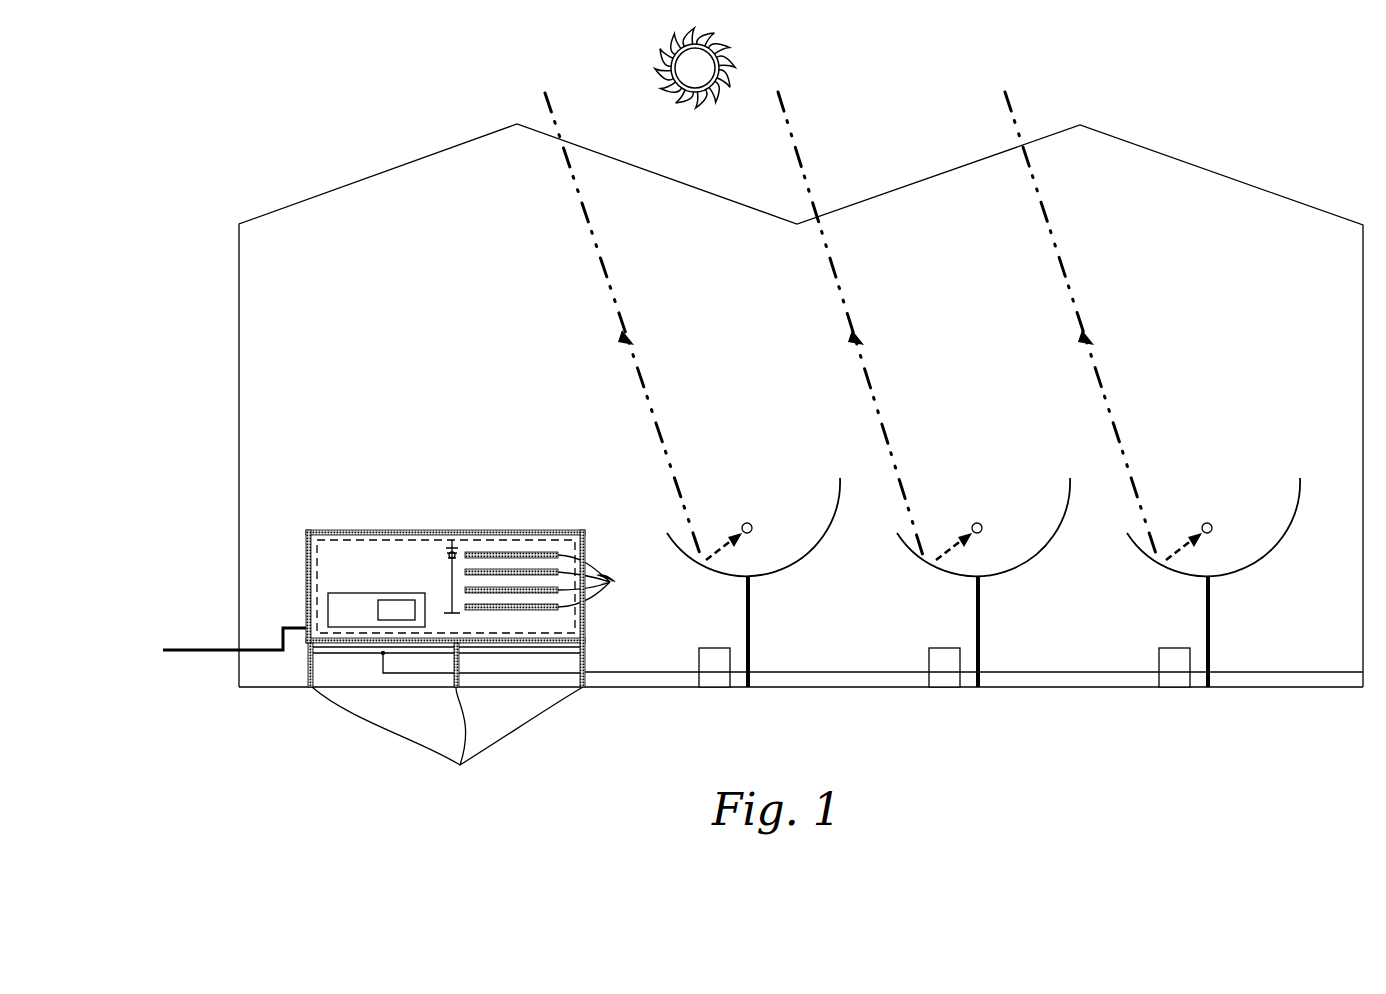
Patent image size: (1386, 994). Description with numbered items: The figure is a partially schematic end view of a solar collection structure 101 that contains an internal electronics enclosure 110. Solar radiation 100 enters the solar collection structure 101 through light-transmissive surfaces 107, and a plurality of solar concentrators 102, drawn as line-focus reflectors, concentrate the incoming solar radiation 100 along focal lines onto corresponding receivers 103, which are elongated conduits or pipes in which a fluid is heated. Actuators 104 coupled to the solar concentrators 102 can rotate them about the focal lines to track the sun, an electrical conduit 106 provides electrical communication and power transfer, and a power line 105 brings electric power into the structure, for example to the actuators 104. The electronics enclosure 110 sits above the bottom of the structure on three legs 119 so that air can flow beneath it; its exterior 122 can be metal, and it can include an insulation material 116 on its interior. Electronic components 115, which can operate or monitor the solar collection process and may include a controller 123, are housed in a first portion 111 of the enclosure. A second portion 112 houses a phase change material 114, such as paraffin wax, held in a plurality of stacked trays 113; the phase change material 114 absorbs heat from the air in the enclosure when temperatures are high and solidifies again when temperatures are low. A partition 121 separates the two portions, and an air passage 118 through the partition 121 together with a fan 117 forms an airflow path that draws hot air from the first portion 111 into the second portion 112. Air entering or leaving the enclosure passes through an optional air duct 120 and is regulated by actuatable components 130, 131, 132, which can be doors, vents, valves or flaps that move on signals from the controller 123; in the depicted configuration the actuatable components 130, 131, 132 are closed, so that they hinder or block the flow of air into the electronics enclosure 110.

The solar radiation 100 is at (545, 95).
The solar collection structure 101 is at (256, 133).
The solar concentrators 102 is at (826, 533).
The receivers 103 is at (752, 523).
The actuators 104 is at (713, 648).
The power line 105 is at (203, 648).
The electrical conduit 106 is at (633, 665).
The light-transmissive surfaces 107 is at (447, 150).
The electronics enclosure 110 is at (330, 455).
The first portion 111 is at (340, 545).
The second portion 112 is at (567, 545).
The stacked trays 113 is at (606, 581).
The phase change material 114 is at (515, 550).
The electronic components 115 is at (368, 593).
The insulation material 116 is at (413, 540).
The fan 117 is at (458, 545).
The air passage 118 is at (452, 627).
The legs 119 is at (447, 738).
The air duct 120 is at (342, 665).
The partition 121 is at (445, 565).
The exterior 122 is at (320, 662).
The controller 123 is at (398, 600).
The actuatable component 130 is at (310, 672).
The actuatable component 131 is at (590, 680).
The actuatable component 132 is at (470, 642).